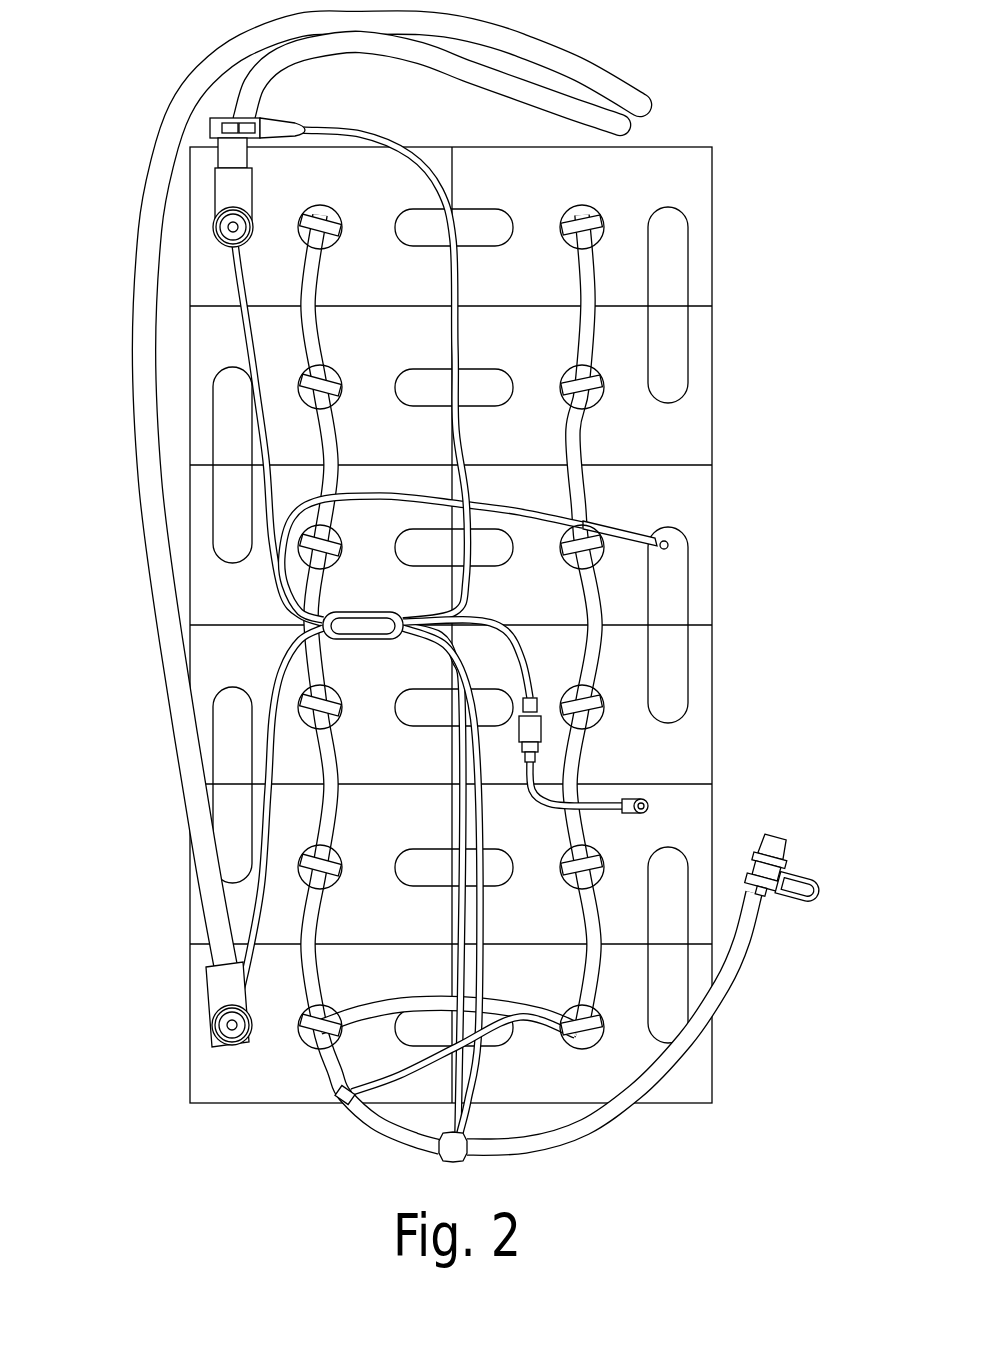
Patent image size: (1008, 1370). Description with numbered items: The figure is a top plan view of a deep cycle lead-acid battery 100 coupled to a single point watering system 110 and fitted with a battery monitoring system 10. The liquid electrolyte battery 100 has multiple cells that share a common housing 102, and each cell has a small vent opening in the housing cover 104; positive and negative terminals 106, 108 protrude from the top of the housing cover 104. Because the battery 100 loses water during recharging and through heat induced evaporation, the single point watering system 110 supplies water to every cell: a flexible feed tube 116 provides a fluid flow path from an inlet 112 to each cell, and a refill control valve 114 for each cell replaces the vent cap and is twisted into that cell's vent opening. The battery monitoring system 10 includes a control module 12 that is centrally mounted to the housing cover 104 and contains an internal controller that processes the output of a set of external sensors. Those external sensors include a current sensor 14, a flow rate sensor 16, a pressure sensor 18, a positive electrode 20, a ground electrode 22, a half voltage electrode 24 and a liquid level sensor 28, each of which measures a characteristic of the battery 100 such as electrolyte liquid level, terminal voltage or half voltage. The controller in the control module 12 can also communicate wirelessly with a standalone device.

The battery monitoring system 10 is at (108, 556).
The control module 12 is at (372, 624).
The current sensor 14 is at (280, 122).
The flow rate sensor 16 is at (458, 1160).
The pressure sensor 18 is at (338, 1102).
The positive electrode 20 is at (242, 284).
The ground electrode 22 is at (255, 975).
The half voltage electrode 24 is at (610, 520).
The liquid level sensor 28 is at (648, 808).
The liquid electrolyte battery 100 is at (532, 584).
The housing 102 is at (712, 487).
The housing cover 104 is at (640, 449).
The positive terminal 106 is at (236, 191).
The negative terminal 108 is at (220, 980).
The single point watering system 110 is at (580, 765).
The inlet 112 is at (780, 860).
The refill control valve 114 is at (337, 240).
The flexible feed tube 116 is at (752, 940).